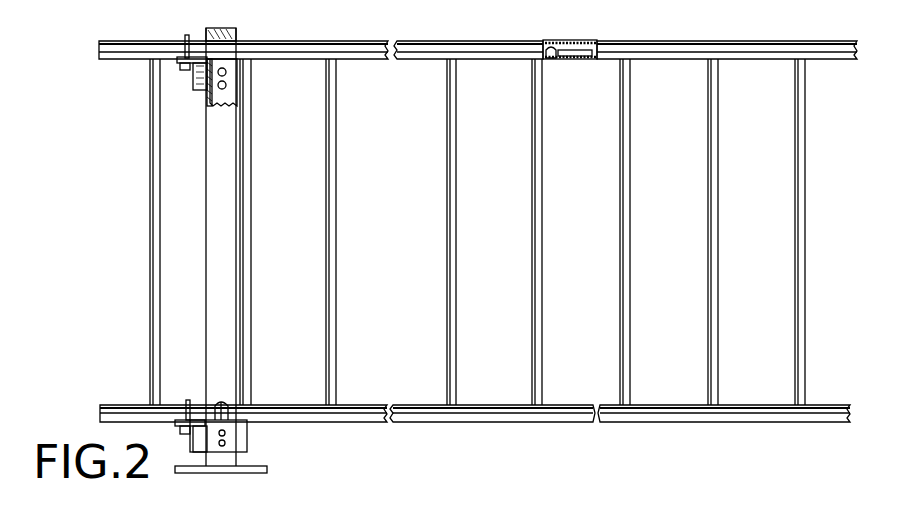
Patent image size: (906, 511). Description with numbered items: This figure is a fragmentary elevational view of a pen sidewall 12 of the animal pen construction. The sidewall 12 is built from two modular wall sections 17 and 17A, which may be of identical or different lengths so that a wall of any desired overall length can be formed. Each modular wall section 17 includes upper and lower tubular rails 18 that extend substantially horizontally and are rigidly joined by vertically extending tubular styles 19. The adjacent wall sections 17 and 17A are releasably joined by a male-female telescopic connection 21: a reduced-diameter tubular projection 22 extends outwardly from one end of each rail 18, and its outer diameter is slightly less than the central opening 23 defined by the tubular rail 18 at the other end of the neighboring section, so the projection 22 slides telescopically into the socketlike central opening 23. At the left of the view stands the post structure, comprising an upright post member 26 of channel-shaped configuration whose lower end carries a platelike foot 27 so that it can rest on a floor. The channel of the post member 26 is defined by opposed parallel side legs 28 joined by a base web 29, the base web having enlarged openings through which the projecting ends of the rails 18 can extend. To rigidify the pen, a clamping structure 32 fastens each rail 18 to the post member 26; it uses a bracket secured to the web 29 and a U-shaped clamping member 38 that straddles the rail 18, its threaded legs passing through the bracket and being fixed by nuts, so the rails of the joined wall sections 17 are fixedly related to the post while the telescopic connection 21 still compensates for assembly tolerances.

The sidewall 12 is at (585, 424).
The modular wall section 17 is at (752, 40).
The modular wall section 17A is at (448, 40).
The tubular rail 18 is at (117, 48).
The tubular style 19 is at (244, 254).
The male-female telescopic connection 21 is at (580, 40).
The tubular projection 22 is at (598, 54).
The central opening 23 is at (553, 52).
The upright post member 26 is at (212, 292).
The platelike foot 27 is at (245, 468).
The side leg 28 is at (228, 98).
The base web 29 is at (208, 98).
The clamping structure 32 is at (178, 73).
The U-shaped clamping member 38 is at (187, 37).